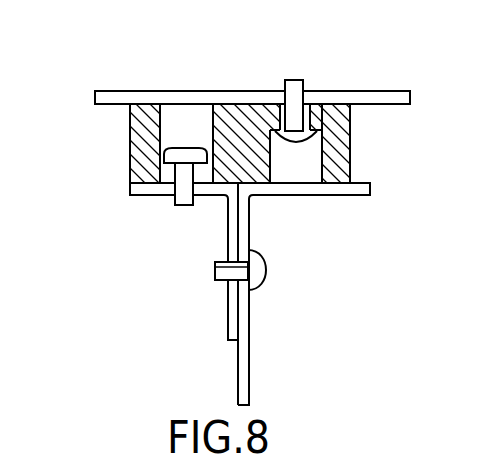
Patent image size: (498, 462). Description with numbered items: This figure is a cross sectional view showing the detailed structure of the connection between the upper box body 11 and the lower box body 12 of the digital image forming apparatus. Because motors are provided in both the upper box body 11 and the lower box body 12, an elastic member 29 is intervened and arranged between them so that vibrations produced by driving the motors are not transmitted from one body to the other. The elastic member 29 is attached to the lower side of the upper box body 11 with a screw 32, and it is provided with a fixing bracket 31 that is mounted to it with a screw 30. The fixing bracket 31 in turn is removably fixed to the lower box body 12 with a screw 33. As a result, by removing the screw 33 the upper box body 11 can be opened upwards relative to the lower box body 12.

The upper box body 11 is at (343, 91).
The lower box body 12 is at (249, 353).
The elastic member 29 is at (133, 158).
The screw 30 is at (187, 147).
The fixing bracket 31 is at (228, 324).
The screw 32 is at (302, 142).
The screw 33 is at (266, 269).